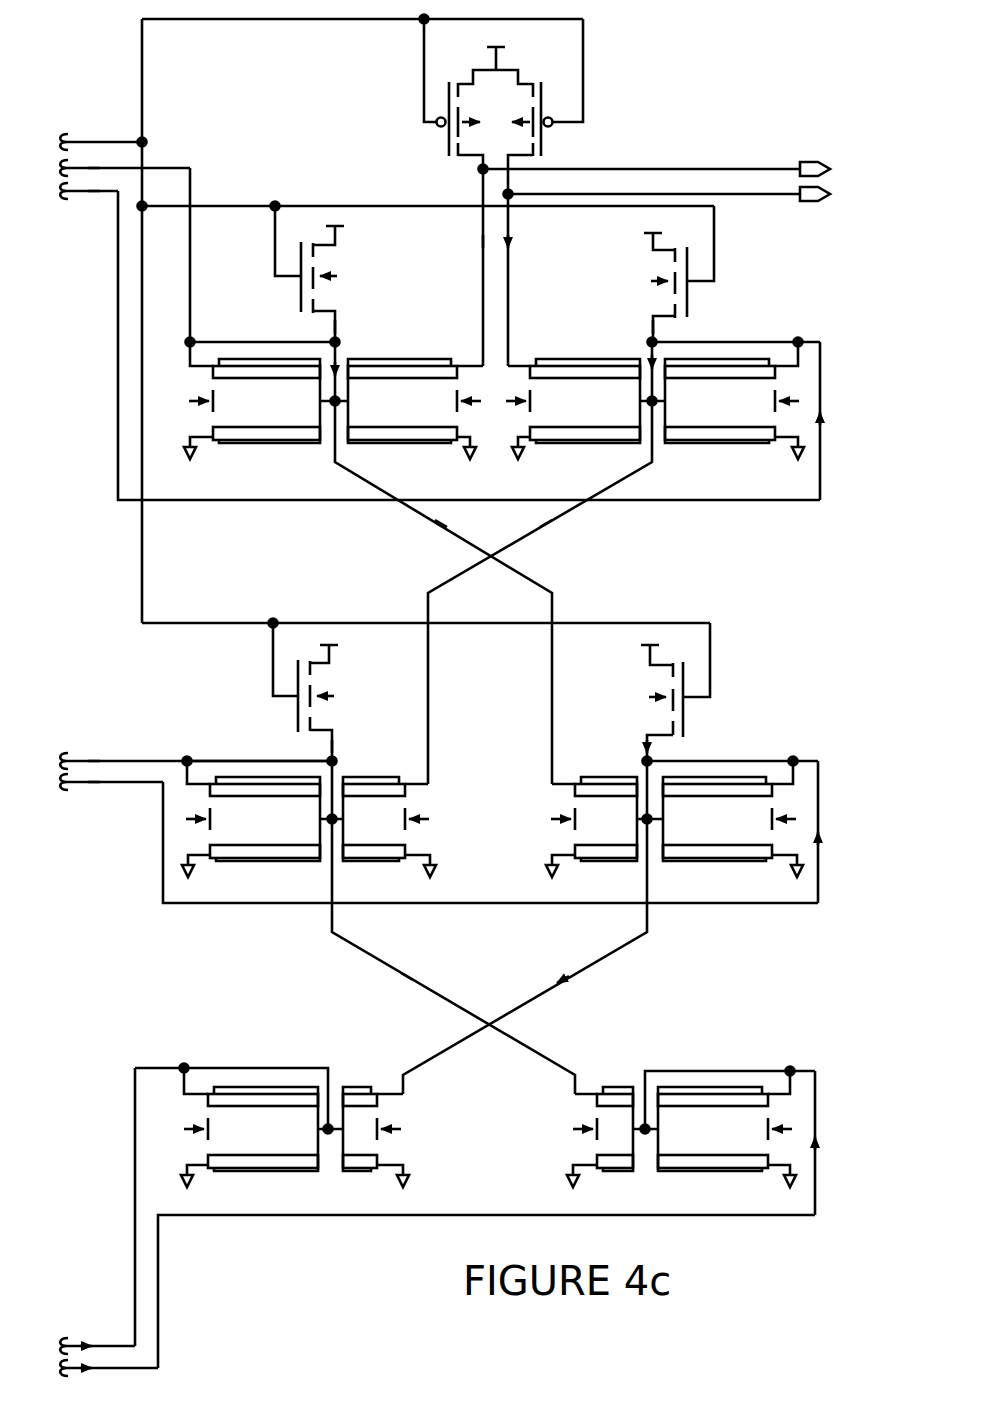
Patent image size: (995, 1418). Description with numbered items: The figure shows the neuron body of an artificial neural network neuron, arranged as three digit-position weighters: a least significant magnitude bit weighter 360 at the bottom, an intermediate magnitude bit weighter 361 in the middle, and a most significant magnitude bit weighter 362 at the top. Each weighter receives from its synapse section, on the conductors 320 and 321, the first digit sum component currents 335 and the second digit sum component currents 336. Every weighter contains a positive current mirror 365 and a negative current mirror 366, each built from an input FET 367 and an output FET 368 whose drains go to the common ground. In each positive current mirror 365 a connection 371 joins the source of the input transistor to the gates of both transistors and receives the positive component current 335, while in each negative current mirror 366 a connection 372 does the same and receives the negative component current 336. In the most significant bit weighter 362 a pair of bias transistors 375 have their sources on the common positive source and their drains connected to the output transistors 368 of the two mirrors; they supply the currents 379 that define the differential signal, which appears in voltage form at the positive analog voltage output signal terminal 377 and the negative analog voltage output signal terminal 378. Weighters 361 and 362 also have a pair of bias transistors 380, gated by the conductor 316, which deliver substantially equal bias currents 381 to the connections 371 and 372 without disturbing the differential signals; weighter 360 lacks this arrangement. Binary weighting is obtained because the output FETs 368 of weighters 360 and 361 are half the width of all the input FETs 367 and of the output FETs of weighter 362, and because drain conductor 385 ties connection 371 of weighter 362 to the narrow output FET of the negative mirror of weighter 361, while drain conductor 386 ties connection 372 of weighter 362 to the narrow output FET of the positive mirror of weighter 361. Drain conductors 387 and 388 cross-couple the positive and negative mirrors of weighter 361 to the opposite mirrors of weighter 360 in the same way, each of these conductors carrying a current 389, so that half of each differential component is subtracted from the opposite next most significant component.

The conductor 316 is at (82, 140).
The conductor 320 is at (192, 249).
The conductor 321 is at (116, 318).
The first digit sum component current 335 is at (100, 163).
The second digit sum component current 336 is at (100, 195).
The least significant magnitude bit weighter 360 is at (828, 1152).
The intermediate magnitude bit weighter 361 is at (827, 822).
The most significant magnitude bit weighter 362 is at (842, 388).
The positive current mirror 365 is at (275, 450).
The negative current mirror 366 is at (667, 455).
The input FET 367 is at (242, 358).
The output FET 368 is at (570, 360).
The connection 371 is at (200, 340).
The connection 372 is at (773, 358).
The bias transistor 375 is at (447, 147).
The positive analog voltage output signal terminal 377 is at (808, 164).
The negative analog voltage output signal terminal 378 is at (810, 200).
The current 379 is at (500, 252).
The bias transistor 380 is at (330, 243).
The bias current 381 is at (340, 328).
The drain conductor 385 is at (417, 512).
The drain conductor 386 is at (553, 597).
The drain conductor 387 is at (350, 943).
The drain conductor 388 is at (613, 953).
The current 389 is at (443, 532).